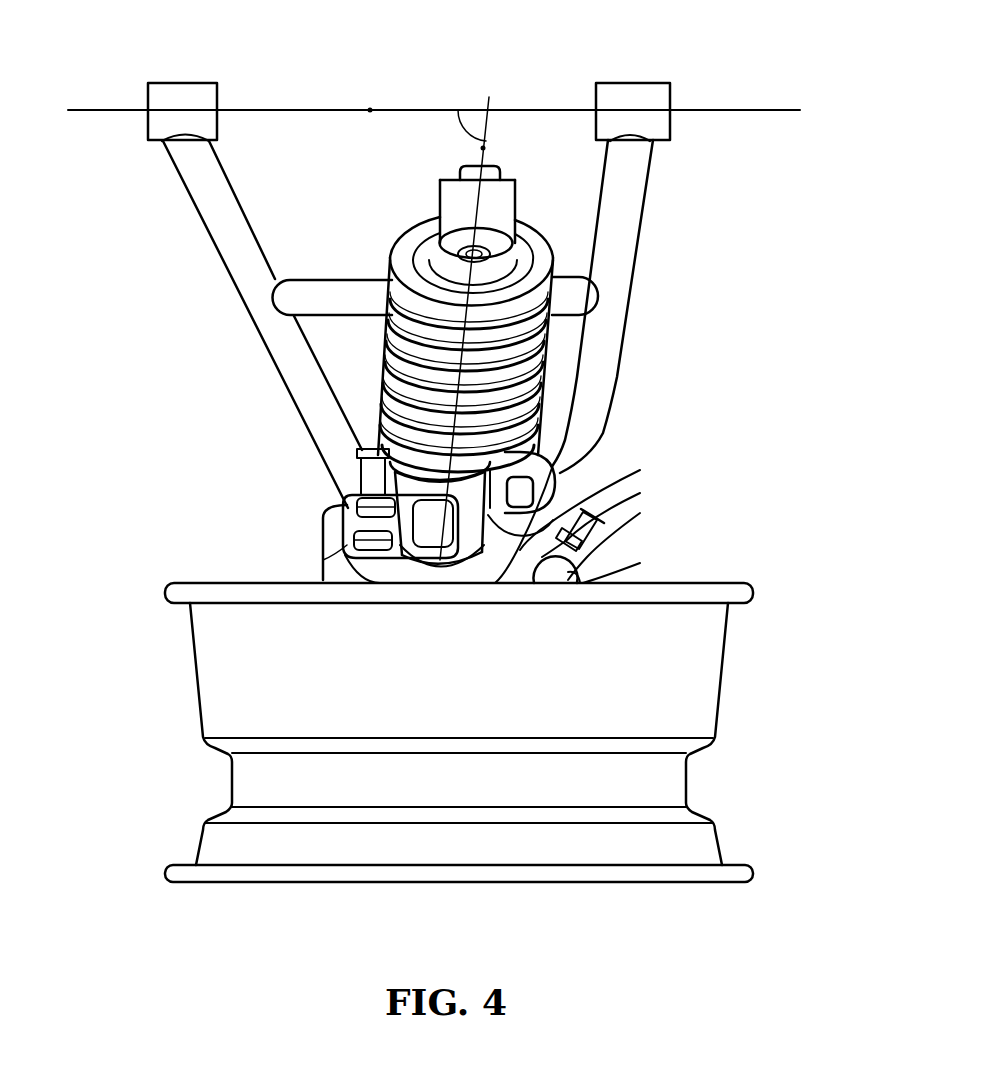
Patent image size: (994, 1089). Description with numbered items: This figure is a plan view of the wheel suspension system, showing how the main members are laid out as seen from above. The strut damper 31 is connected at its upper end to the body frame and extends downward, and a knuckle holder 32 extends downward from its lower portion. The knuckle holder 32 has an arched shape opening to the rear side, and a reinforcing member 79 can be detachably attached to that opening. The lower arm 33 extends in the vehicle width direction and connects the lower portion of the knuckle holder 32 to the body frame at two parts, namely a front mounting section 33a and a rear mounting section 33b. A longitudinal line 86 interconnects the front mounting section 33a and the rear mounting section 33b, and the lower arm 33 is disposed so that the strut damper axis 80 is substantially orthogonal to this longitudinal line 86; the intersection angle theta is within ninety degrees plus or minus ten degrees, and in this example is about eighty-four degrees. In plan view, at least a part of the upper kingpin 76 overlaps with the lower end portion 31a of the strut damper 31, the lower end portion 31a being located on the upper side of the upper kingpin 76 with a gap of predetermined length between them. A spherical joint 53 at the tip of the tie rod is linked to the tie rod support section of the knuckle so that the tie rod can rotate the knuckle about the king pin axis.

The front mounting section 33a is at (172, 93).
The rear mounting section 33b is at (628, 98).
The longitudinal line 86 is at (370, 110).
The strut damper axis 80 is at (483, 148).
The lower arm 33 is at (277, 350).
The strut damper 31 is at (555, 366).
The reinforcing member 79 is at (543, 480).
The lower end portion 31a is at (540, 517).
The upper kingpin 76 is at (540, 540).
The spherical joint 53 is at (577, 570).
The knuckle holder 32 is at (330, 538).